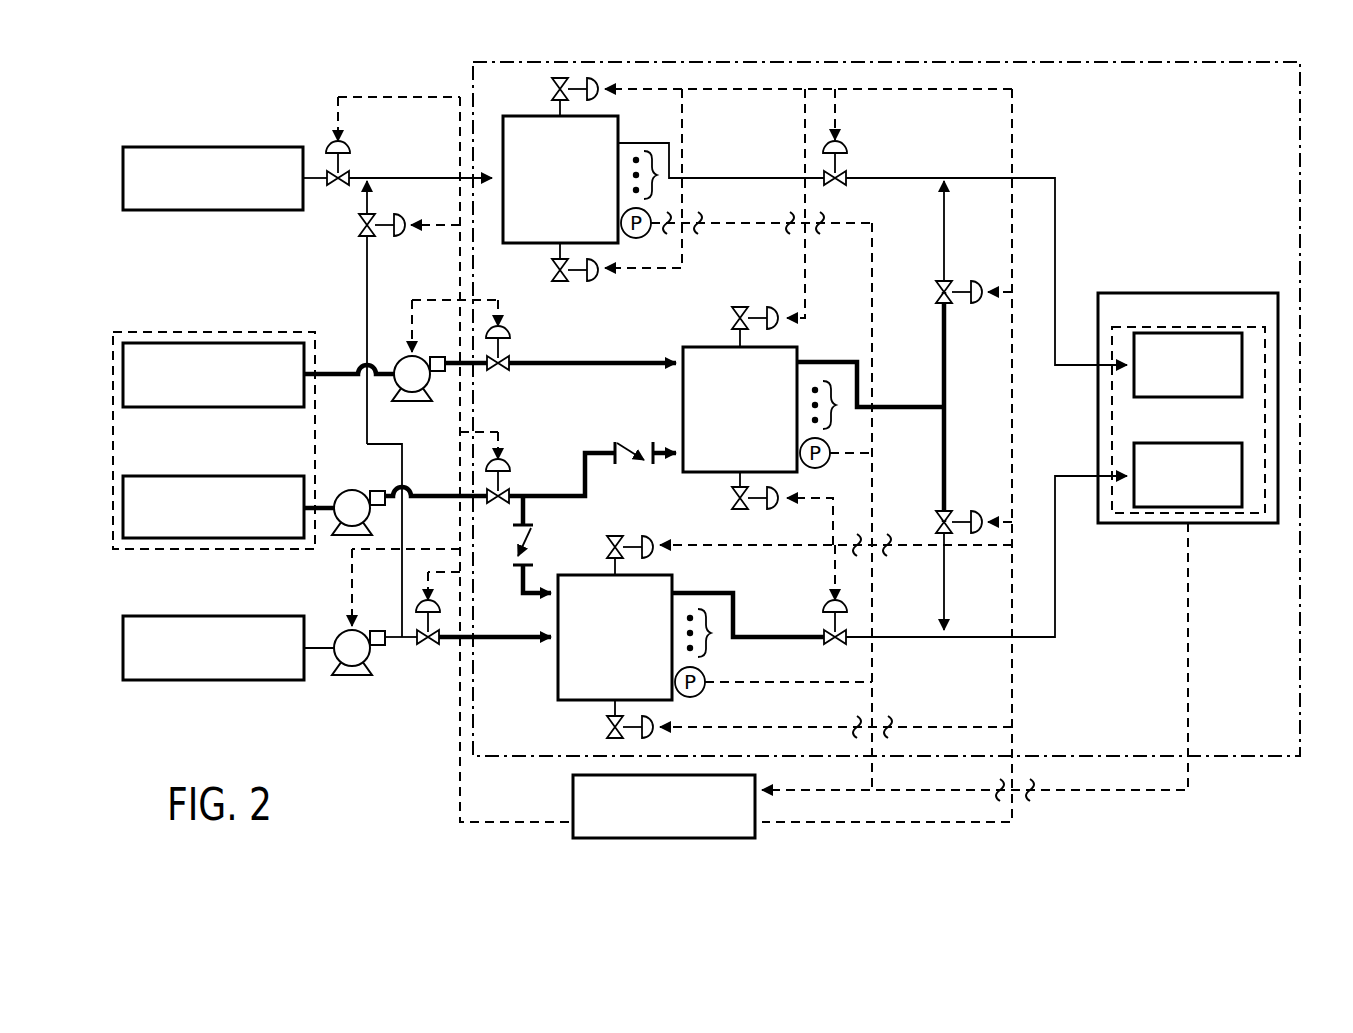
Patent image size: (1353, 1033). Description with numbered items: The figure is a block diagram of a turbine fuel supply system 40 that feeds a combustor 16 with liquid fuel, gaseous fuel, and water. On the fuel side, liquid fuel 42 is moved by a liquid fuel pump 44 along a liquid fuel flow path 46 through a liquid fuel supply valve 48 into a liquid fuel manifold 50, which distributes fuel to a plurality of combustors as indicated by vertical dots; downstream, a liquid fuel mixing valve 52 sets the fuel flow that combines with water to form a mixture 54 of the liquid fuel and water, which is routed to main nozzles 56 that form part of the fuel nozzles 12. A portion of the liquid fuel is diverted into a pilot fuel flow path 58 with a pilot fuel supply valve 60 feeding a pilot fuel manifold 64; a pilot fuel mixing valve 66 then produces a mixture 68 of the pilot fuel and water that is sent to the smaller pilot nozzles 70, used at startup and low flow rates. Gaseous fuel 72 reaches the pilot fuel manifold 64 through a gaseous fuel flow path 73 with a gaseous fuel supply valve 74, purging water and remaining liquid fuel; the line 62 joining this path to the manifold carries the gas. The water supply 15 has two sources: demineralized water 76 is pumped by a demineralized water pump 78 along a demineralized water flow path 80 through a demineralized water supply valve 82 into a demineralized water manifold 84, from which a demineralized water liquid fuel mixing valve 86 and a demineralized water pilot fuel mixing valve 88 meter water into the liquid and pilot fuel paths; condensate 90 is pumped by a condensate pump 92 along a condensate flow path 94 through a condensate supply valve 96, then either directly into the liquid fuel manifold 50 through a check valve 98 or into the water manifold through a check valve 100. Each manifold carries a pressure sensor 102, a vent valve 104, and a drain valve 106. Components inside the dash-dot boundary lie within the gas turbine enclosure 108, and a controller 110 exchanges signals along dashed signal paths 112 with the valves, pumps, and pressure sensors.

The turbine fuel supply system 40 is at (148, 83).
The gaseous fuel 72 is at (217, 147).
The gaseous fuel supply valve 74 is at (328, 147).
The gaseous fuel flow path 73 is at (315, 184).
The gaseous fuel supply line 62 is at (440, 178).
The pilot fuel supply valve 60 is at (357, 233).
The pilot fuel flow path 58 is at (400, 597).
The pilot fuel manifold 64 is at (619, 126).
The vent valve 104 is at (550, 86).
The drain valve 106 is at (552, 266).
The combustor 16 is at (655, 175).
The pressure sensor 102 is at (651, 234).
The mixture of the pilot fuel and water 68 is at (1057, 265).
The pilot fuel mixing valve 66 is at (840, 177).
The demineralized water pilot fuel mixing valve 88 is at (934, 300).
The demineralized water liquid fuel mixing valve 86 is at (935, 525).
The fuel nozzles 12 is at (1268, 340).
The pilot nozzles 70 is at (1185, 397).
The main nozzles 56 is at (1190, 443).
The water supply 15 is at (160, 332).
The demineralized water 76 is at (215, 343).
The demineralized water pump 78 is at (400, 355).
The demineralized water flow path 80 is at (452, 381).
The demineralized water supply valve 82 is at (502, 375).
The demineralized water manifold 84 is at (800, 355).
The condensate 90 is at (215, 476).
The condensate pump 92 is at (345, 490).
The condensate flow path 94 is at (445, 496).
The condensate supply valve 96 is at (505, 462).
The check valve 100 is at (648, 463).
The check valve 98 is at (532, 542).
The liquid fuel 42 is at (215, 616).
The liquid fuel pump 44 is at (350, 675).
The liquid fuel flow path 46 is at (402, 643).
The liquid fuel supply valve 48 is at (431, 650).
The liquid fuel manifold 50 is at (673, 585).
The liquid fuel mixing valve 52 is at (831, 624).
The mixture of the liquid fuel and water 54 is at (1057, 555).
The controller 110 is at (571, 807).
The signal paths 112 is at (458, 793).
The gas turbine enclosure 108 is at (1251, 758).